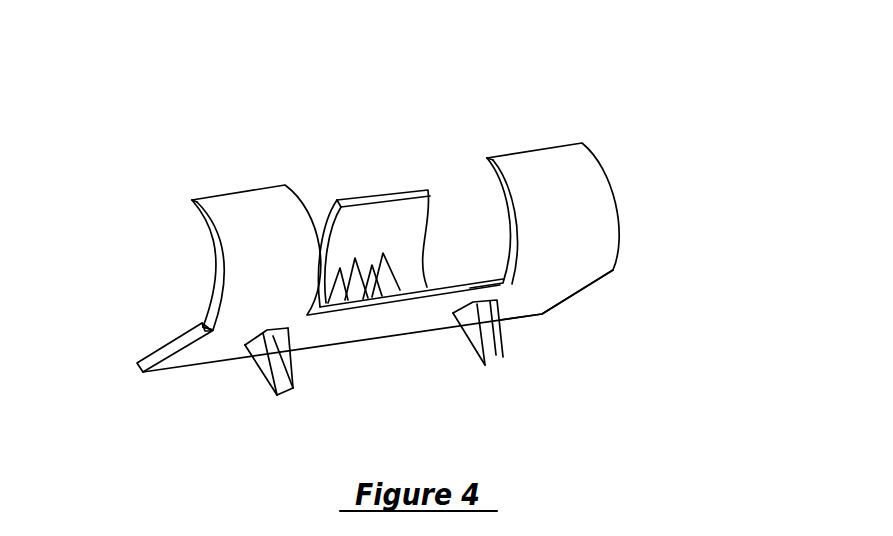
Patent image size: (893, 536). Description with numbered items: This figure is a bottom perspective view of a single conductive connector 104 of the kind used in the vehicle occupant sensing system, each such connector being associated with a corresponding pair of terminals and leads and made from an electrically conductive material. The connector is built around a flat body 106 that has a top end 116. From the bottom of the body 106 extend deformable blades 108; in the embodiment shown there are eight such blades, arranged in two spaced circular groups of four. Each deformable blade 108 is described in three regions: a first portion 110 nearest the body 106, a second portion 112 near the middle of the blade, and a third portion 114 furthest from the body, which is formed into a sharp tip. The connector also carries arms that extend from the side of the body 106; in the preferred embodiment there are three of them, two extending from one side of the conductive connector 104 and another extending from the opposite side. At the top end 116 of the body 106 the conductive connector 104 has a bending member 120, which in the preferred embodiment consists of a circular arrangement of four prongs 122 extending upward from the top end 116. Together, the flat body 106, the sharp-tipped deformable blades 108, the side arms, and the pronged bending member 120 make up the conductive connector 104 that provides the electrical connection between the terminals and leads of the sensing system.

The conductive connector 104 is at (541, 113).
The flat body 106 is at (165, 352).
The deformable blade 108 is at (497, 328).
The first portion 110 is at (280, 340).
The second portion 112 is at (287, 358).
The third portion 114 is at (296, 378).
The top end 116 is at (188, 321).
The bending member 120 is at (391, 252).
The prong 122 is at (385, 283).